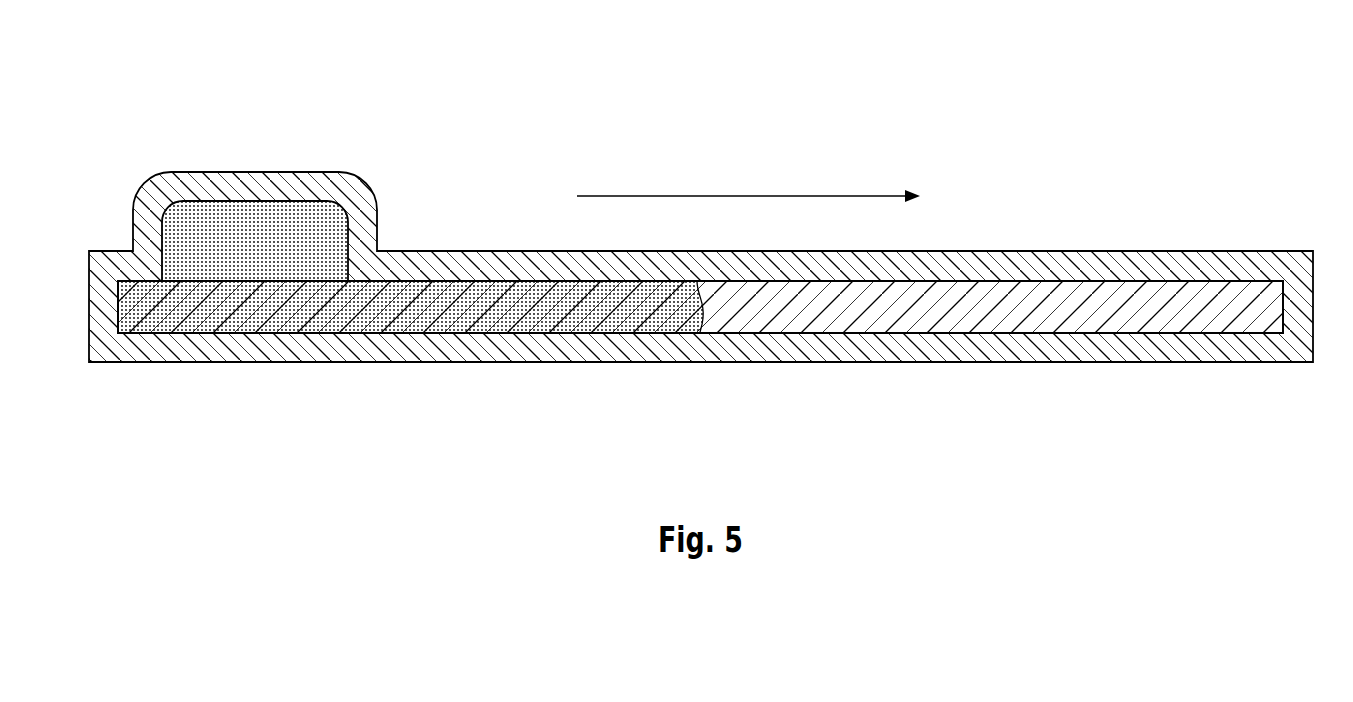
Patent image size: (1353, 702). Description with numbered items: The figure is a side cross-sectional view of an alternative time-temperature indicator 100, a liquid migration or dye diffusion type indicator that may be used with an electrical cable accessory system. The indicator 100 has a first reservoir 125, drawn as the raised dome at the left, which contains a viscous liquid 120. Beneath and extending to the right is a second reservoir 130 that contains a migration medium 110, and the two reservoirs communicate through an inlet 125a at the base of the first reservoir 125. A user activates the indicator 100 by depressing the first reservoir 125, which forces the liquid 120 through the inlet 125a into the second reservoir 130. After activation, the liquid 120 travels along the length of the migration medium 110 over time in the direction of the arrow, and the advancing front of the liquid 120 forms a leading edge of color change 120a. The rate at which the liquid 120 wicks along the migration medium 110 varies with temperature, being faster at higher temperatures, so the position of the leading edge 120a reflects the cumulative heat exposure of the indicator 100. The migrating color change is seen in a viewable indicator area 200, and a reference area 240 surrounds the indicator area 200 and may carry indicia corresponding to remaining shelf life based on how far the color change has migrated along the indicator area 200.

The time-temperature indicator 100 is at (701, 256).
The migration medium 110 is at (827, 305).
The viscous liquid 120 is at (317, 305).
The leading edge of color change 120a is at (690, 316).
The first reservoir 125 is at (297, 222).
The inlet 125a is at (259, 292).
The second reservoir 130 is at (513, 340).
The indicator area 200 is at (1033, 270).
The reference area 240 is at (1173, 240).